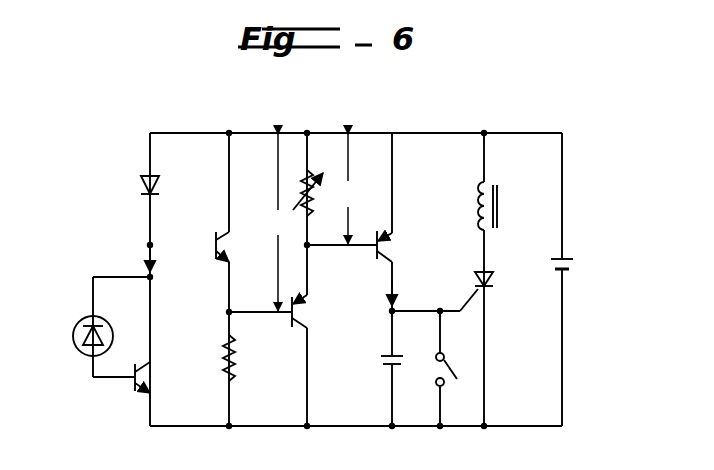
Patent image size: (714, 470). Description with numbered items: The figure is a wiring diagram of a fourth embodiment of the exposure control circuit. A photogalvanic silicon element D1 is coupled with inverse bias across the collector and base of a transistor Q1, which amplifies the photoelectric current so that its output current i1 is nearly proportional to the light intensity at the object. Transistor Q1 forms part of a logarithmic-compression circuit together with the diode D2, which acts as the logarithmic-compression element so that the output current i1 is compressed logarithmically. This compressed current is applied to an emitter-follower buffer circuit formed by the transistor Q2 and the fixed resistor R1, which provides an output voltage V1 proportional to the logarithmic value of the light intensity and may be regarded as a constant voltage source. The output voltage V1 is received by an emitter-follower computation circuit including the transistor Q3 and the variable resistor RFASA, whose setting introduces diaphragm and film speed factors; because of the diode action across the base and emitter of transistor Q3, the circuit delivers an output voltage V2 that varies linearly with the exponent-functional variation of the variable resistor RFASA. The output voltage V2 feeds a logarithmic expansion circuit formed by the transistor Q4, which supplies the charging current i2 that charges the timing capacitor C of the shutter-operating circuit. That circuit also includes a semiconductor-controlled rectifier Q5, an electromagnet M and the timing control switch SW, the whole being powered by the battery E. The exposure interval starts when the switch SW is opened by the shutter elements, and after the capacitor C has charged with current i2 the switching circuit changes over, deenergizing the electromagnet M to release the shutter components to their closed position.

The diode D2 is at (141, 180).
The silicon element D1 is at (73, 338).
The transistor Q1 is at (148, 382).
The transistor Q2 is at (222, 242).
The transistor Q3 is at (300, 308).
The transistor Q4 is at (396, 241).
The semiconductor-controlled rectifier Q5 is at (489, 290).
The fixed resistor R1 is at (238, 362).
The variable resistor RFASA is at (307, 172).
The output voltage V1 is at (279, 222).
The output voltage V2 is at (351, 189).
The output current i1 is at (162, 260).
The charging current i2 is at (403, 293).
The timing capacitor C is at (381, 360).
The timing control switch SW is at (454, 368).
The electromagnet M is at (499, 208).
The battery E is at (573, 264).